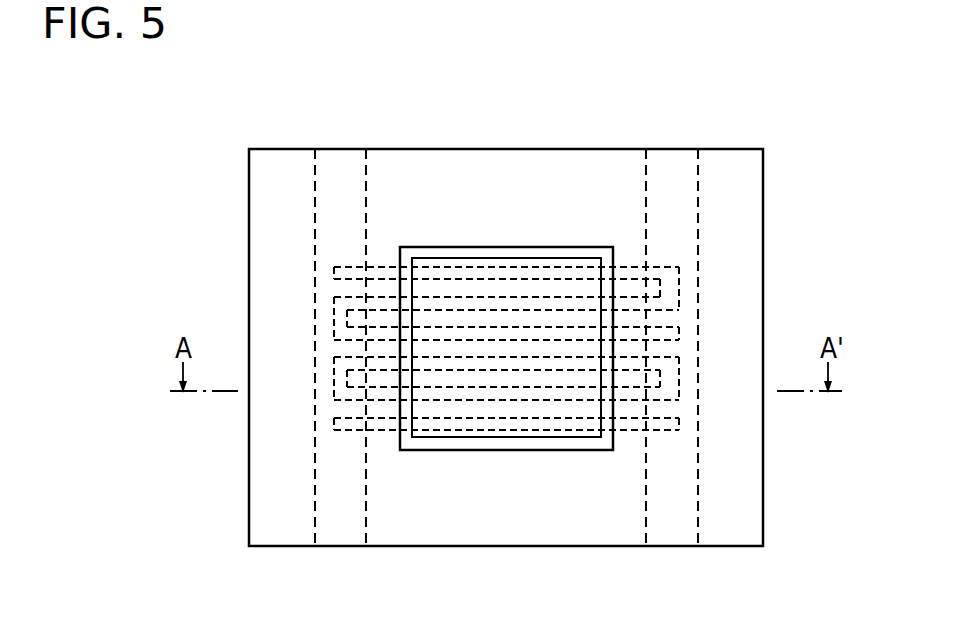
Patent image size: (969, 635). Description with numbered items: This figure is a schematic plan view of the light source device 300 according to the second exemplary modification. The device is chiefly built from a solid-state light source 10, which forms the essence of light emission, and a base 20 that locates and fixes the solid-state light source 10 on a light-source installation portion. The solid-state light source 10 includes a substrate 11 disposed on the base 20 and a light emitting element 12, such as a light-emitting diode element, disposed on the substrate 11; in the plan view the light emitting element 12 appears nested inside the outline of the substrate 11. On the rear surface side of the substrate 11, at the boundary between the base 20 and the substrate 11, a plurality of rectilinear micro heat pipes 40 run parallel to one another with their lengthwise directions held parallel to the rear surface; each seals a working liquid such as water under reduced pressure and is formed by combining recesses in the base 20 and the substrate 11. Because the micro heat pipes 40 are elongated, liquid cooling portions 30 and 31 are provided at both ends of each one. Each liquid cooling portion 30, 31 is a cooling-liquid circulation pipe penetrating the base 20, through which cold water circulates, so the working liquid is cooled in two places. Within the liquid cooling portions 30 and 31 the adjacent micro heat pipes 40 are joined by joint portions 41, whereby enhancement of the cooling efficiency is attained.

The light source device 300 is at (868, 101).
The solid-state light source 10 is at (506, 343).
The substrate 11 is at (453, 450).
The light emitting element 12 is at (534, 437).
The base 20 is at (750, 212).
The liquid cooling portion 30 is at (315, 512).
The liquid cooling portion 31 is at (647, 512).
The micro heat pipe 40 is at (347, 267).
The joint portion 41 is at (346, 317).